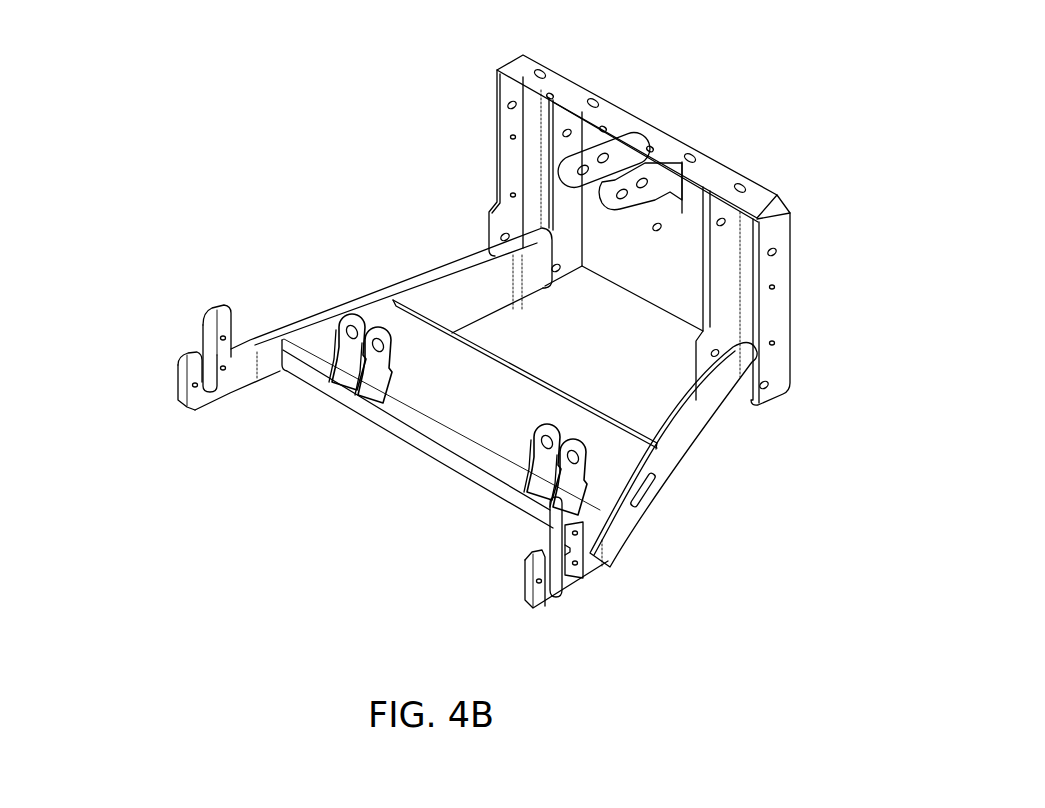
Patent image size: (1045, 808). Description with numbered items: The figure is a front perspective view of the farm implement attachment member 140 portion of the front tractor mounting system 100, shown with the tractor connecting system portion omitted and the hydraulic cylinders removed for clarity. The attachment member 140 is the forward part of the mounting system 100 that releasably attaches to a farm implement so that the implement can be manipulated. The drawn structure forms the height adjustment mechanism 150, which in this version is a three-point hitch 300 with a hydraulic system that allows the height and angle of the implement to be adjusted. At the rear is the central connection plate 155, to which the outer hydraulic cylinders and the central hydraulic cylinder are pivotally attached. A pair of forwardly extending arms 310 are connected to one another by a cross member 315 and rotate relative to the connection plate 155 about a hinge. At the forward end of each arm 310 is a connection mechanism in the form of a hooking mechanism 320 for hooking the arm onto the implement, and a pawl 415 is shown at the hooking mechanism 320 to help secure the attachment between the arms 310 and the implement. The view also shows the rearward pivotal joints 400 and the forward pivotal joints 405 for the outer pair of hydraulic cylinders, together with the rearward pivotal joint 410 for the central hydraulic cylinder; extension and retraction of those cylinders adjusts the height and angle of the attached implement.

The tractor mounting system 100 is at (515, 345).
The farm implement attachment member 140 is at (421, 467).
The height adjustment mechanism 150 is at (571, 230).
The connection plate 155 is at (778, 305).
The three-point hitch 300 is at (515, 370).
The forwardly extending arms 310 is at (425, 273).
The cross member 315 is at (437, 402).
The hooking mechanism 320 is at (205, 302).
The rearward pivotal joints 400 is at (658, 230).
The forward pivotal joints 405 is at (327, 408).
The rearward pivotal joint 410 is at (624, 150).
The pawl 415 is at (577, 557).